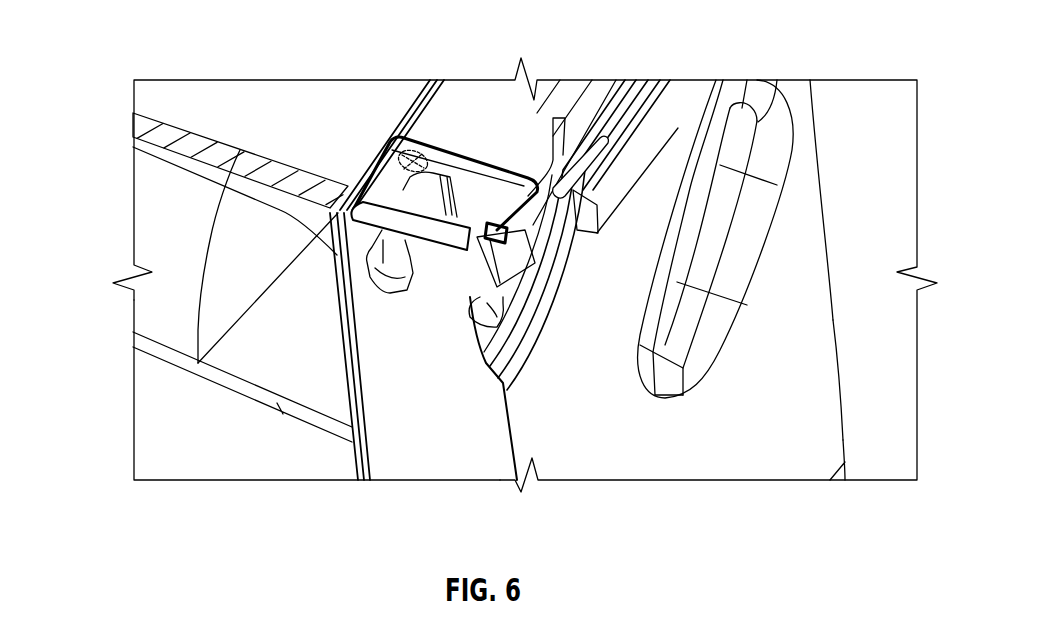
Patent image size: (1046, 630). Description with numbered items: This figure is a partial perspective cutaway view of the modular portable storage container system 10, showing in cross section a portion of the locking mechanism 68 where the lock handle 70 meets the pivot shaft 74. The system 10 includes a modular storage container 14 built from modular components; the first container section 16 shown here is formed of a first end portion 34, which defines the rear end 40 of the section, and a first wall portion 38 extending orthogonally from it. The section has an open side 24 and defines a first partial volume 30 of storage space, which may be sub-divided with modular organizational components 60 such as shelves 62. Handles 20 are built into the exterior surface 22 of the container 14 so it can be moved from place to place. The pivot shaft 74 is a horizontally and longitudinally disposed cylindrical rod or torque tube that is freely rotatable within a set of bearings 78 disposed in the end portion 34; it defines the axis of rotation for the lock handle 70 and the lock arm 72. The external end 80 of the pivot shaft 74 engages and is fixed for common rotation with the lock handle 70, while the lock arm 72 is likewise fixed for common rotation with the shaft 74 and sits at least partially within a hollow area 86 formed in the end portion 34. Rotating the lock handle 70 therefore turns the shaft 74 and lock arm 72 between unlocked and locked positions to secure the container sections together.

The modular portable storage container system 10 is at (878, 84).
The modular storage container 14 is at (825, 363).
The first container section 16 is at (830, 395).
The handles 20 is at (687, 195).
The exterior surface 22 is at (833, 433).
The open side 24 is at (235, 193).
The first partial volume 30 is at (312, 95).
The first end portion 34 is at (717, 450).
The first wall portion 38 is at (147, 435).
The rear end 40 is at (765, 450).
The modular organizational components 60 is at (201, 327).
The shelves 62 is at (153, 213).
The locking mechanism 68 is at (684, 126).
The lock handle 70 is at (660, 97).
The lock arm 72 is at (430, 173).
The pivot shaft 74 is at (240, 150).
The bearings 78 is at (375, 176).
The ends of the pivot shaft 80 is at (533, 263).
The hollow area 86 is at (548, 100).